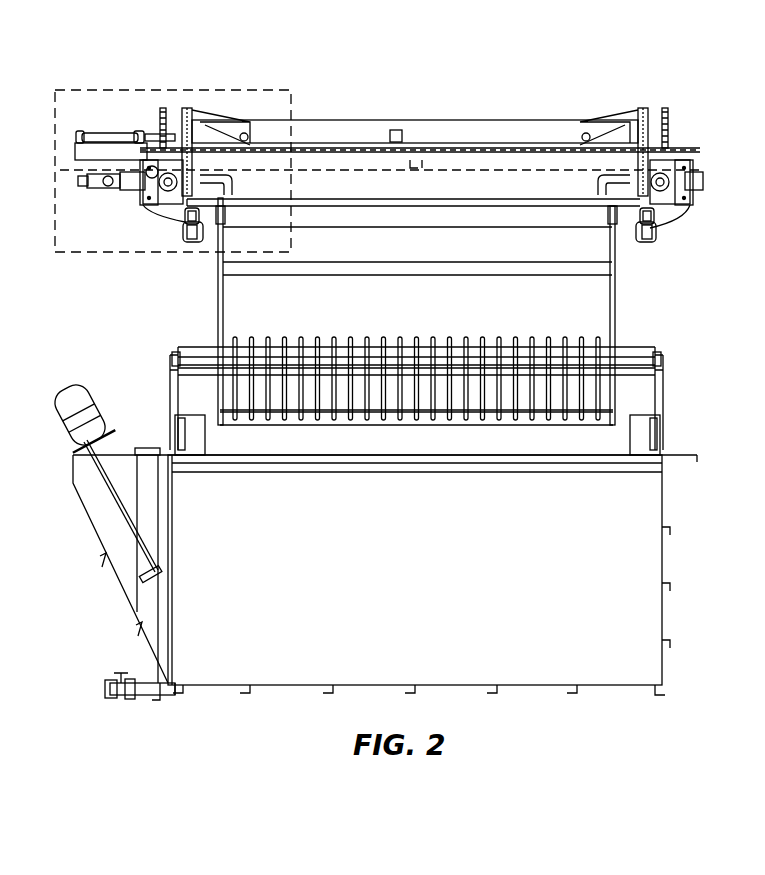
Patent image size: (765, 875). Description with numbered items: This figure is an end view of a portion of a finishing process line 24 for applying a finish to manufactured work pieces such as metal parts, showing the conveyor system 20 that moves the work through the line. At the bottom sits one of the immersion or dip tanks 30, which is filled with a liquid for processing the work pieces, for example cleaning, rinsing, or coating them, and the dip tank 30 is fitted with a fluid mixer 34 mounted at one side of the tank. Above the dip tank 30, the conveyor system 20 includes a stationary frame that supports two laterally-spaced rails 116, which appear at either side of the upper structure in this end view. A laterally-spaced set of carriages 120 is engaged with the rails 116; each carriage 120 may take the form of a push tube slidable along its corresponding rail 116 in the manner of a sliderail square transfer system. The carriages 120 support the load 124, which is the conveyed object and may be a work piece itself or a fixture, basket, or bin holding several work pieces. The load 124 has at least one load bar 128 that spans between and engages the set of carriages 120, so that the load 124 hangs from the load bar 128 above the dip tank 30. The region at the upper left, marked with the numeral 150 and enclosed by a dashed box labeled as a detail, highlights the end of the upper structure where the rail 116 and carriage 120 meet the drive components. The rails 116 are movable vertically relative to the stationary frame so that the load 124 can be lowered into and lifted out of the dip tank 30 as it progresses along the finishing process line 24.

The finishing process line 24 is at (618, 40).
The load bar 128 is at (470, 197).
The drive mechanism 150 is at (100, 116).
The carriage 120 is at (188, 222).
The rail 116 is at (193, 243).
The load 124 is at (218, 312).
The conveyor system 20 is at (638, 257).
The dip tank 30 is at (429, 580).
The fluid mixer 34 is at (80, 433).